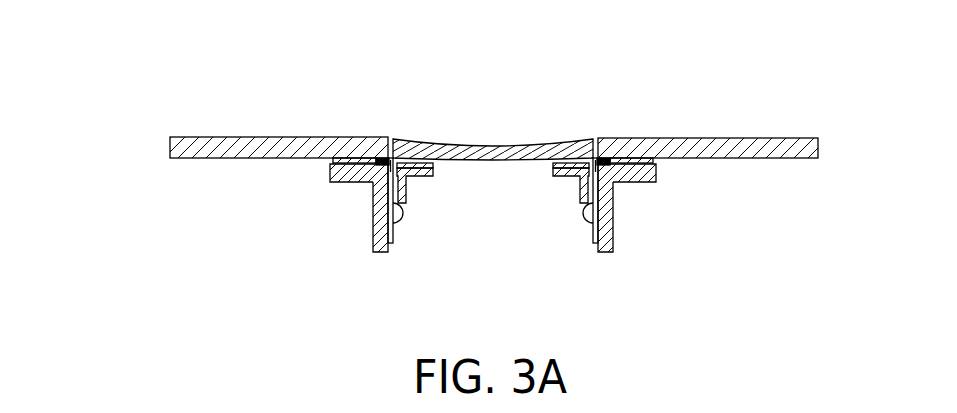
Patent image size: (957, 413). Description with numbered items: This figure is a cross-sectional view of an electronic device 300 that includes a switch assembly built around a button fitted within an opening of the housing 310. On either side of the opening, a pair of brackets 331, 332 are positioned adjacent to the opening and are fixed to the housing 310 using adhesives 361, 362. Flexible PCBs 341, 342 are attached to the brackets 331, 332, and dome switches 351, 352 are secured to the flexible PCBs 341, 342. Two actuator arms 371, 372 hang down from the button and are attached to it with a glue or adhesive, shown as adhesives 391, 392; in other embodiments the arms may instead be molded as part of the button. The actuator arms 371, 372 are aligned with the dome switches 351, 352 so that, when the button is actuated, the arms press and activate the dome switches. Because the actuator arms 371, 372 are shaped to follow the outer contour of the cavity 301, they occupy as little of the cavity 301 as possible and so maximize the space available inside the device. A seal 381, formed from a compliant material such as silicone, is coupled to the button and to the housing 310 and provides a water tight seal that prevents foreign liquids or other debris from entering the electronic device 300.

The electronic device 300 is at (277, 49).
The housing 310 is at (168, 147).
The adhesive 361 is at (333, 137).
The adhesive 362 is at (638, 160).
The seal 381 is at (390, 139).
The flexible PCB 341 is at (373, 184).
The flexible PCB 342 is at (615, 192).
The bracket 331 is at (373, 213).
The bracket 332 is at (610, 252).
The adhesive 391 is at (433, 172).
The adhesive 392 is at (555, 176).
The actuator arm 371 is at (420, 177).
The actuator arm 372 is at (567, 178).
The dome switch 351 is at (398, 222).
The dome switch 352 is at (592, 223).
The cavity 301 is at (503, 206).